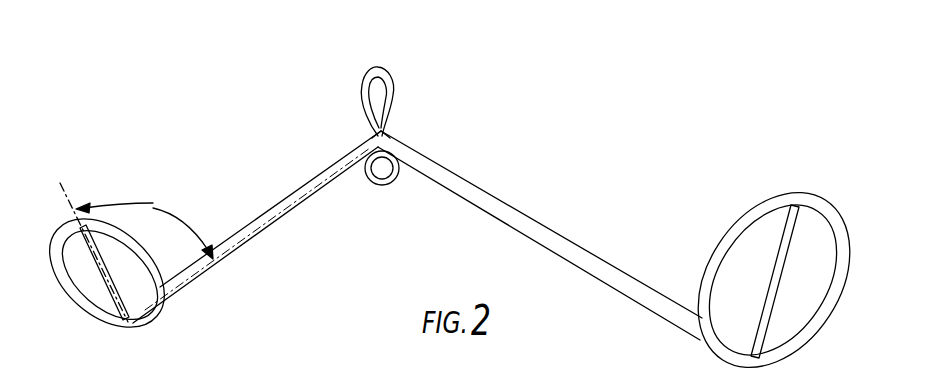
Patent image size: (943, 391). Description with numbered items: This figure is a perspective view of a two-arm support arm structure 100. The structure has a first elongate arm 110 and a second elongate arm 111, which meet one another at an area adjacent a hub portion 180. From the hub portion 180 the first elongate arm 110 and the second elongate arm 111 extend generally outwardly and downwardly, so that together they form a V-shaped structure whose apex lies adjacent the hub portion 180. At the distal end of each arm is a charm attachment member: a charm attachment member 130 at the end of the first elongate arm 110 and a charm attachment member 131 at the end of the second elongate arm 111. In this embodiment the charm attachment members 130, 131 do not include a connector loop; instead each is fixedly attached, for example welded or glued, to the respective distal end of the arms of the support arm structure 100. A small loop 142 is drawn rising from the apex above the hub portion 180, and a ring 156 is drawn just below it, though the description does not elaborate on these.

The support arm structure 100 is at (570, 80).
The first elongate arm 110 is at (251, 228).
The second elongate arm 111 is at (537, 228).
The charm attachment member 130 is at (62, 282).
The charm attachment member 131 is at (768, 196).
The top loop 142 is at (378, 72).
The ring 156 is at (388, 186).
The hub portion 180 is at (394, 130).